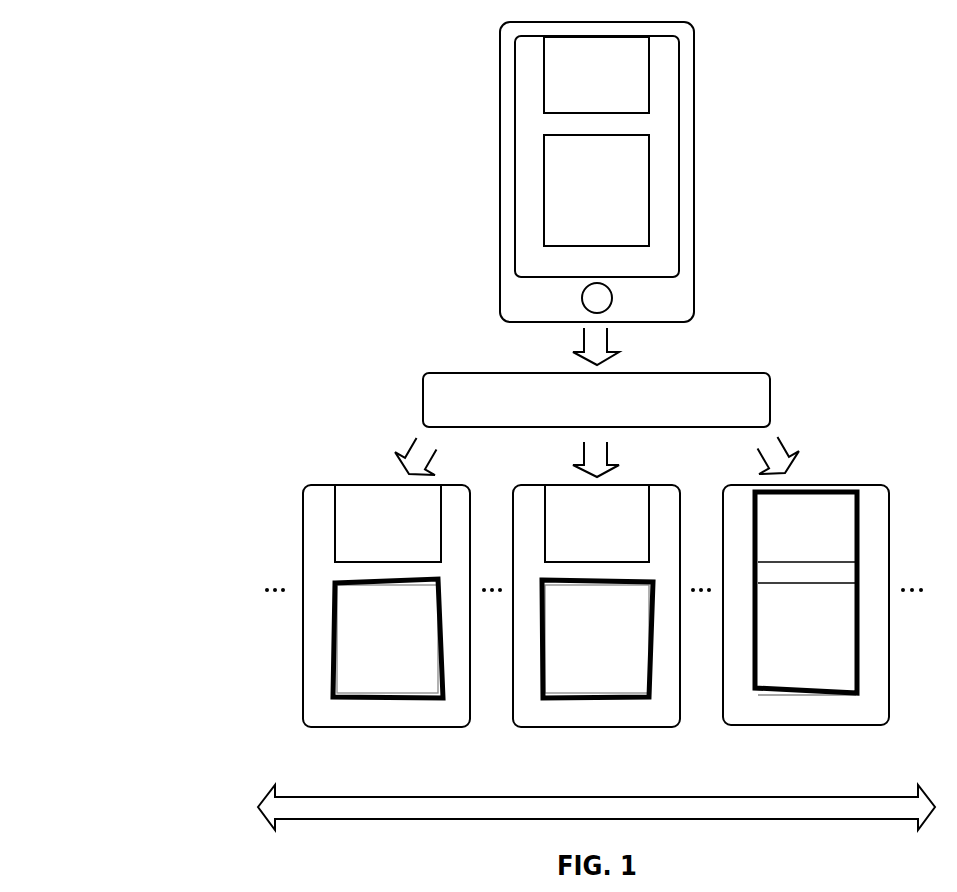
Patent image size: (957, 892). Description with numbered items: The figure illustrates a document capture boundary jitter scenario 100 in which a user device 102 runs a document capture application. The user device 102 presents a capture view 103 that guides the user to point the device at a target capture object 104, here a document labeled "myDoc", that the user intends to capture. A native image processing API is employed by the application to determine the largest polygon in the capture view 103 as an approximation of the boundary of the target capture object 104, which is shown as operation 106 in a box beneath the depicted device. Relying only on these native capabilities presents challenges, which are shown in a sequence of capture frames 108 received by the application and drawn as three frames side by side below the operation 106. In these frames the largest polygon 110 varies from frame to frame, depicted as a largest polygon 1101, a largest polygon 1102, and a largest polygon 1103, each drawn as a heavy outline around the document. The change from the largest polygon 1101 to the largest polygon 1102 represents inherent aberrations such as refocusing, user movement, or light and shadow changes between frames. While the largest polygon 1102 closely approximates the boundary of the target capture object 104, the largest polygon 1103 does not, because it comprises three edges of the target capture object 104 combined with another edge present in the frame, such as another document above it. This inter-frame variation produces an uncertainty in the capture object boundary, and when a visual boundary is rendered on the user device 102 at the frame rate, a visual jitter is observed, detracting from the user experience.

The document capture boundary jitter scenario 100 is at (79, 56).
The user device 102 is at (695, 82).
The capture view 103 is at (515, 63).
The target capture object 104 is at (544, 177).
The operation 106 is at (583, 401).
The sequence of capture frames 108 is at (236, 527).
The largest polygon 110 is at (596, 628).
The largest polygon 1101 is at (383, 700).
The largest polygon 1102 is at (593, 700).
The largest polygon 1103 is at (803, 697).